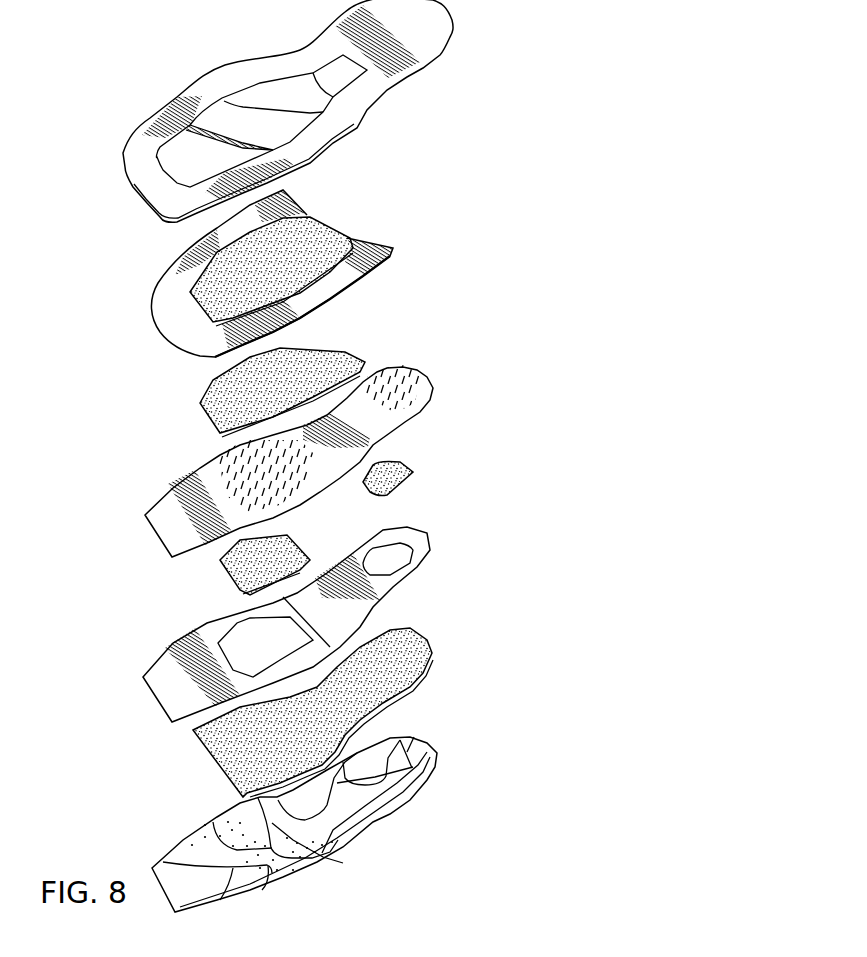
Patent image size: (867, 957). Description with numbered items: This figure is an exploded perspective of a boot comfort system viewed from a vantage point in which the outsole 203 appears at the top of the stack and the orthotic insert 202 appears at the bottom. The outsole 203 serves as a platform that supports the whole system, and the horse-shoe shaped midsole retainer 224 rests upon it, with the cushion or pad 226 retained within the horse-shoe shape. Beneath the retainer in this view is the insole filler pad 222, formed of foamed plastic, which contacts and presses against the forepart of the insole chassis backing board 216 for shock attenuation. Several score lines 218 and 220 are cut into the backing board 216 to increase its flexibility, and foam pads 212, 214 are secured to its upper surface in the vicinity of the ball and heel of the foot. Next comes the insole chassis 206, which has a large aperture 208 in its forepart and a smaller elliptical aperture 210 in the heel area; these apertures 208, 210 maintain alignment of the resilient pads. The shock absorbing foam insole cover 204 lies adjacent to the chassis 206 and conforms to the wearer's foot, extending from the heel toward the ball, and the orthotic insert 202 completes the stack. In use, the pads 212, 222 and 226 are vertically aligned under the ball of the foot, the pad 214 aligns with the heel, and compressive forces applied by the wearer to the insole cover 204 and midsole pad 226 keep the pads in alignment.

The orthotic insert 202 is at (415, 756).
The outsole 203 is at (440, 24).
The shock absorbing foam insole cover 204 is at (407, 652).
The insole chassis 206 is at (334, 617).
The large aperture 208 is at (243, 635).
The elliptical aperture 210 is at (388, 562).
The foam pad 212 is at (283, 556).
The foam pad 214 is at (407, 468).
The insole chassis backing board 216 is at (304, 446).
The score lines 218 is at (230, 468).
The score lines 220 is at (403, 384).
The insole filler pad 222 is at (343, 357).
The midsole retainer 224 is at (374, 262).
The cushion or pad 226 is at (303, 242).